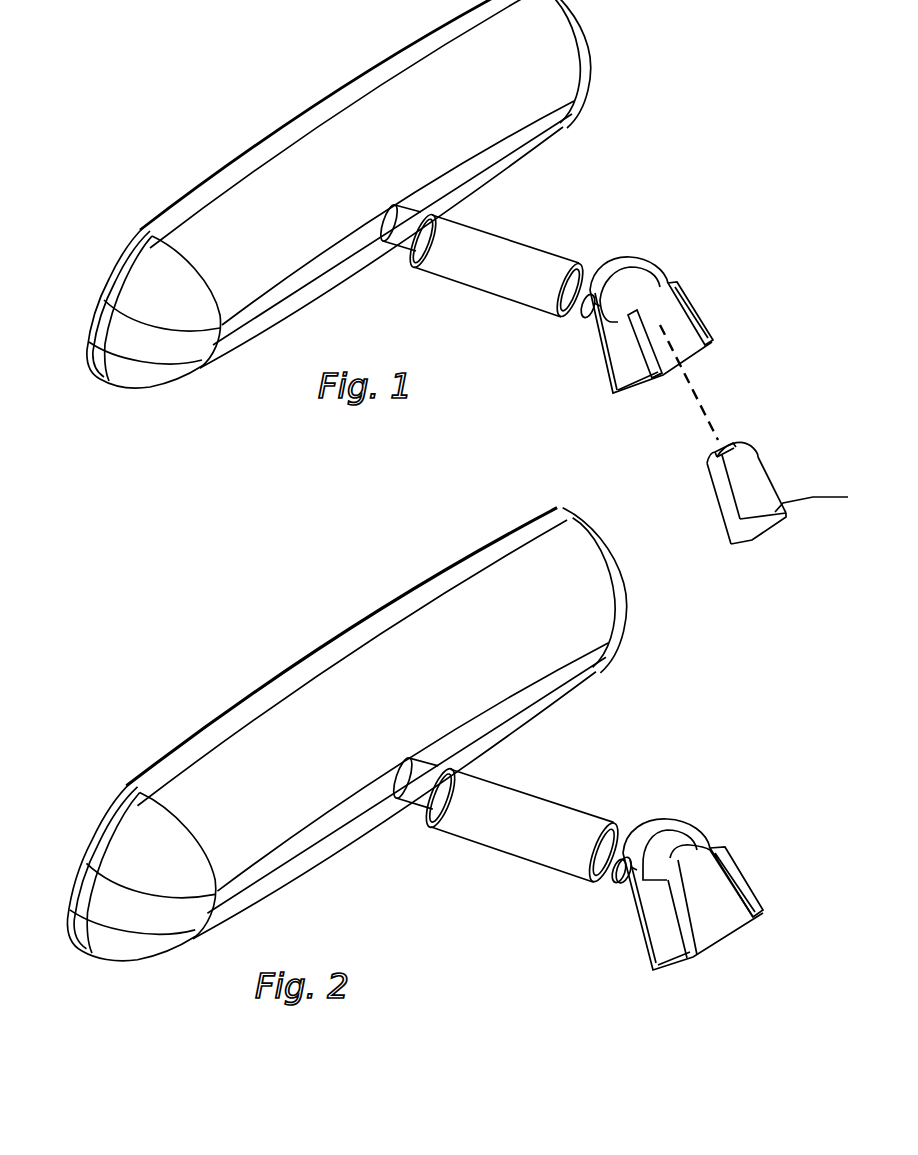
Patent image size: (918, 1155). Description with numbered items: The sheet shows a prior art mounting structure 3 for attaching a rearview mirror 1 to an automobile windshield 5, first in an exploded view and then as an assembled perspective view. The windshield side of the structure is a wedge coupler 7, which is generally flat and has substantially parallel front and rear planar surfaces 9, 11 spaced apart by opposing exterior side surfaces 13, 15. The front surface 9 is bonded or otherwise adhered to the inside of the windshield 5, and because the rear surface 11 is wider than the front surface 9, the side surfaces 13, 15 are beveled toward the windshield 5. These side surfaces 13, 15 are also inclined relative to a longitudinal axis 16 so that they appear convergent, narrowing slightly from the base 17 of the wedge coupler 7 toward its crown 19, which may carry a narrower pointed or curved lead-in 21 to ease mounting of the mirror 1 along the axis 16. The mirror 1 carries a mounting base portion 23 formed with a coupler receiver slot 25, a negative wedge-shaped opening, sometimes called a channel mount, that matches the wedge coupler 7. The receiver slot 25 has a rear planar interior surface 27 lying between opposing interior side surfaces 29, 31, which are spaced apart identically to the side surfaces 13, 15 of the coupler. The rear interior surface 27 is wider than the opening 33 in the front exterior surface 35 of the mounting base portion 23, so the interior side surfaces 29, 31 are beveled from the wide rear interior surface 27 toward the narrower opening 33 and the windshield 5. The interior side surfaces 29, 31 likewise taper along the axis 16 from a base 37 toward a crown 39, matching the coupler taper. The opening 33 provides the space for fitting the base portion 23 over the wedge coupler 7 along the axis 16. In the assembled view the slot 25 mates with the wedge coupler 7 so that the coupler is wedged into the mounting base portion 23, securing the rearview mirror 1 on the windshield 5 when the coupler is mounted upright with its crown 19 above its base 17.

In FIG. 1, the rearview mirror 1 is at (323, 97).
In FIG. 2, the rearview mirror 1 is at (340, 640).
In FIG. 1, the mounting structure 3 is at (698, 326).
In FIG. 2, the mounting structure 3 is at (715, 871).
In FIG. 1, the windshield 5 is at (754, 496).
In FIG. 1, the wedge coupler 7 is at (733, 496).
In FIG. 2, the wedge coupler 7 is at (710, 877).
In FIG. 1, the front planar surface 9 is at (761, 496).
In FIG. 2, the front planar surface 9 is at (729, 883).
In FIG. 1, the rear planar surface 11 is at (718, 507).
In FIG. 1, the exterior side surface 13 is at (741, 515).
In FIG. 1, the exterior side surface 15 is at (763, 475).
In FIG. 1, the base 17 is at (773, 527).
In FIG. 1, the longitudinal axis 16 is at (697, 402).
In FIG. 1, the crown 19 is at (722, 447).
In FIG. 1, the lead-in 21 is at (712, 459).
In FIG. 1, the mounting base portion 23 is at (637, 258).
In FIG. 2, the mounting base portion 23 is at (688, 825).
In FIG. 1, the coupler receiver slot 25 is at (673, 323).
In FIG. 2, the coupler receiver slot 25 is at (692, 838).
In FIG. 1, the rear planar interior surface 27 is at (630, 287).
In FIG. 2, the rear planar interior surface 27 is at (675, 840).
In FIG. 1, the interior side surface 29 is at (637, 335).
In FIG. 1, the interior side surface 31 is at (693, 328).
In FIG. 1, the opening 33 is at (687, 352).
In FIG. 1, the front exterior surface 35 is at (688, 302).
In FIG. 2, the front exterior surface 35 is at (747, 897).
In FIG. 1, the base 37 is at (667, 373).
In FIG. 1, the crown 39 is at (632, 282).